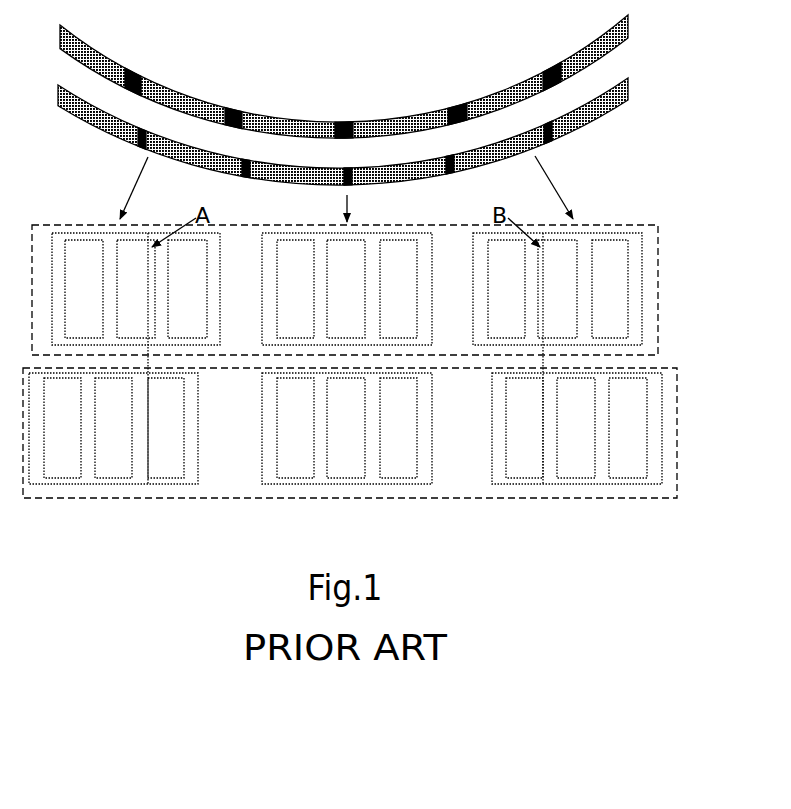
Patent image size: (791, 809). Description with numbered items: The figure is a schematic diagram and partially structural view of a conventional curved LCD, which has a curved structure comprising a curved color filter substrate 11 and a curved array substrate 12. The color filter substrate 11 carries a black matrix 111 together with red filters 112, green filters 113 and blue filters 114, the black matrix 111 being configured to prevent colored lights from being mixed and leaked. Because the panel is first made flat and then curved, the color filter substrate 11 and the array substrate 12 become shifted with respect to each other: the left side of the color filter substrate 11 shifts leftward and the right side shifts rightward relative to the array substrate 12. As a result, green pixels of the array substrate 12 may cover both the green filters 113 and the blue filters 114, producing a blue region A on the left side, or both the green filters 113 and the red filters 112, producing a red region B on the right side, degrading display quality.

The color filter substrate 11 is at (630, 27).
The array substrate 12 is at (630, 90).
The black matrix 111 is at (655, 453).
The red filters 112 is at (62, 460).
The green filters 113 is at (103, 460).
The blue filters 114 is at (158, 462).